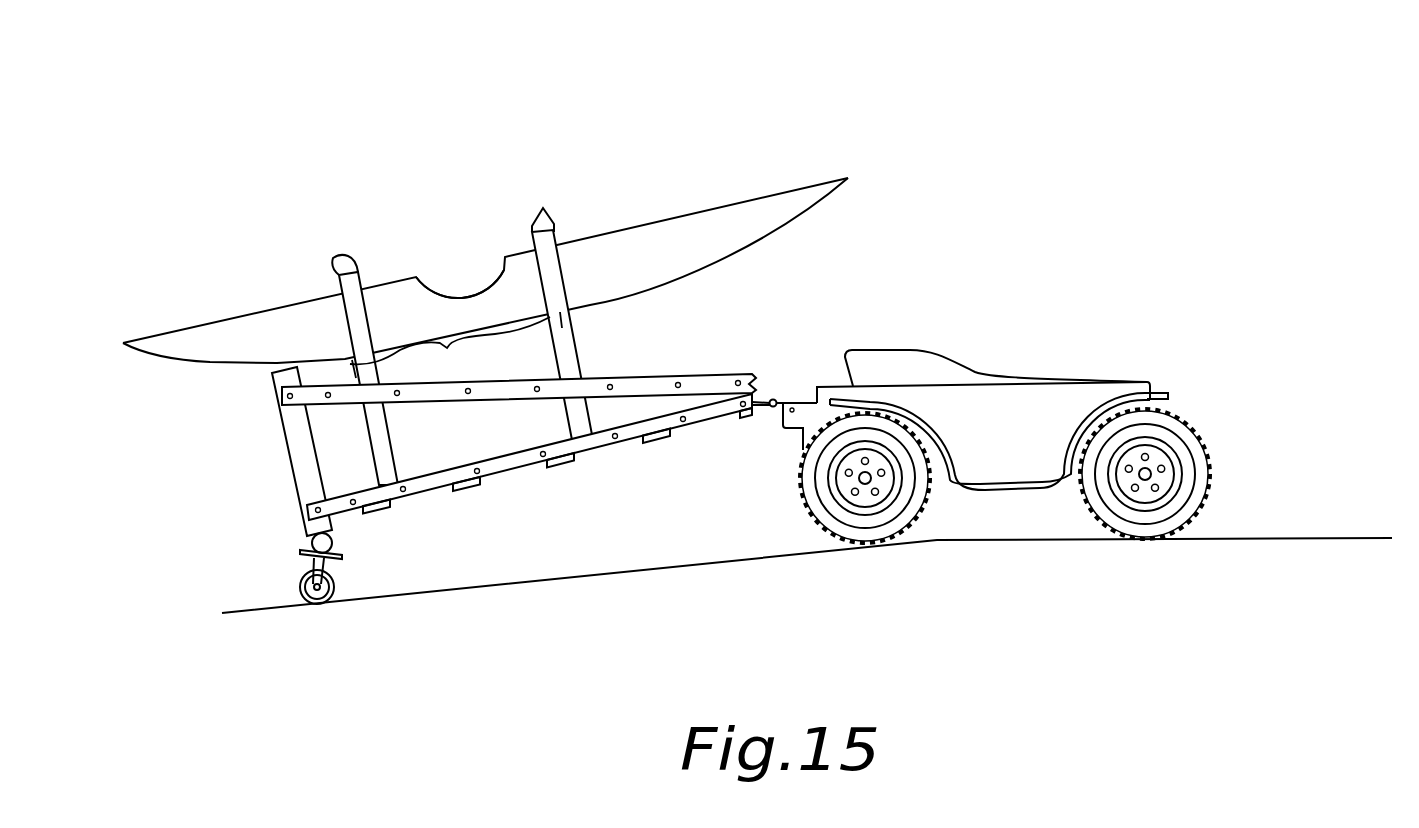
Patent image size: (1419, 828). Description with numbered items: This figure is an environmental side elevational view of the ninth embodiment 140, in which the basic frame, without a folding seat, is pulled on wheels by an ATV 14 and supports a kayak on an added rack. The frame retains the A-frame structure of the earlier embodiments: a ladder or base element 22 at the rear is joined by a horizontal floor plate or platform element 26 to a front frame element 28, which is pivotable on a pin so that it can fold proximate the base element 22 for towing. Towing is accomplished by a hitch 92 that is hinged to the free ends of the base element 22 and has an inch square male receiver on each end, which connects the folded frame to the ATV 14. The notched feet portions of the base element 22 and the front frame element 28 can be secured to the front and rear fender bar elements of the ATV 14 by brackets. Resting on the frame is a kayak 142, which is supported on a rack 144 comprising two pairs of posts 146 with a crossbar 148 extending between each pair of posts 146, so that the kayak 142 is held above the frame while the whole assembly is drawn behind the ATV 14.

The ATV 14 is at (1013, 445).
The ladder or base element 22 is at (537, 449).
The horizontal floor plate or platform element 26 is at (292, 447).
The front frame element 28 is at (452, 398).
The hitch 92 is at (761, 400).
The ninth embodiment 140 is at (587, 119).
The kayak 142 is at (717, 217).
The rack 144 is at (455, 222).
The posts 146 is at (341, 262).
The crossbar 148 is at (447, 341).